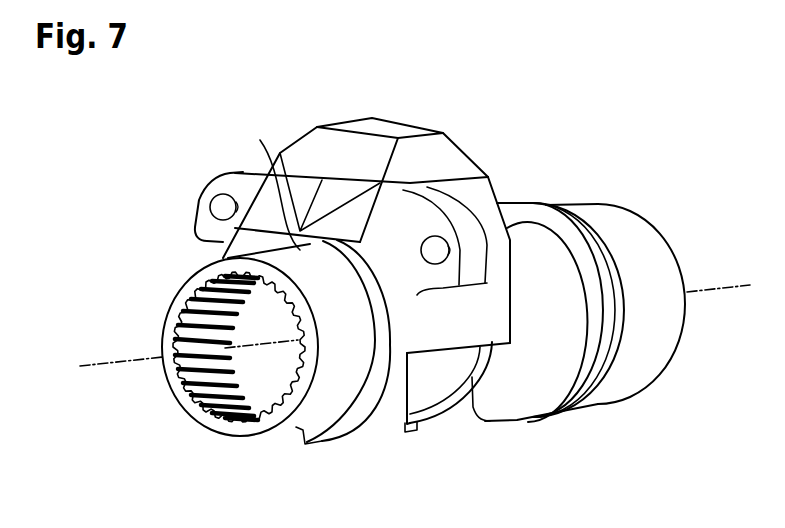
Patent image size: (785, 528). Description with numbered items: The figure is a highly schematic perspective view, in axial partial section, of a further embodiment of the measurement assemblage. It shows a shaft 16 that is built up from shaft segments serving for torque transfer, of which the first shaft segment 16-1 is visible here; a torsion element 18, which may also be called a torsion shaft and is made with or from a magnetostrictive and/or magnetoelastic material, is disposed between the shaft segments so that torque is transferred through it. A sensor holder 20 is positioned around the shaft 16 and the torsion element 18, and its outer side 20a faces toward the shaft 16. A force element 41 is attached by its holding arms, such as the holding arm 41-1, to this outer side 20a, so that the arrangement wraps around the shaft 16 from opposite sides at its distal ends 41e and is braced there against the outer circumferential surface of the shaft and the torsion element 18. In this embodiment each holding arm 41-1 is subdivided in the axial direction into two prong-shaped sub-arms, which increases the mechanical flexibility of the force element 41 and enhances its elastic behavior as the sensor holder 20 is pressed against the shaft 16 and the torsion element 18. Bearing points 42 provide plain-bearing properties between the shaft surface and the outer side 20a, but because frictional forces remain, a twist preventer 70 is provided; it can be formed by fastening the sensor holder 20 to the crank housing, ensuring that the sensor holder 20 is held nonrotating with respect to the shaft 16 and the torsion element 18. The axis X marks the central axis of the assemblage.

The sensor holder 20 is at (318, 150).
The outer side of sensor holder 20a is at (462, 147).
The bearing points 42 is at (278, 152).
The twist preventer 70 is at (220, 206).
The shaft 16 is at (610, 269).
The first shaft segment 16-1 is at (585, 200).
The force element 41 is at (348, 373).
The holding arm 41-1 is at (358, 412).
The distal ends 41e is at (300, 441).
The torsion element 18 is at (389, 423).
The axis X is at (713, 290).